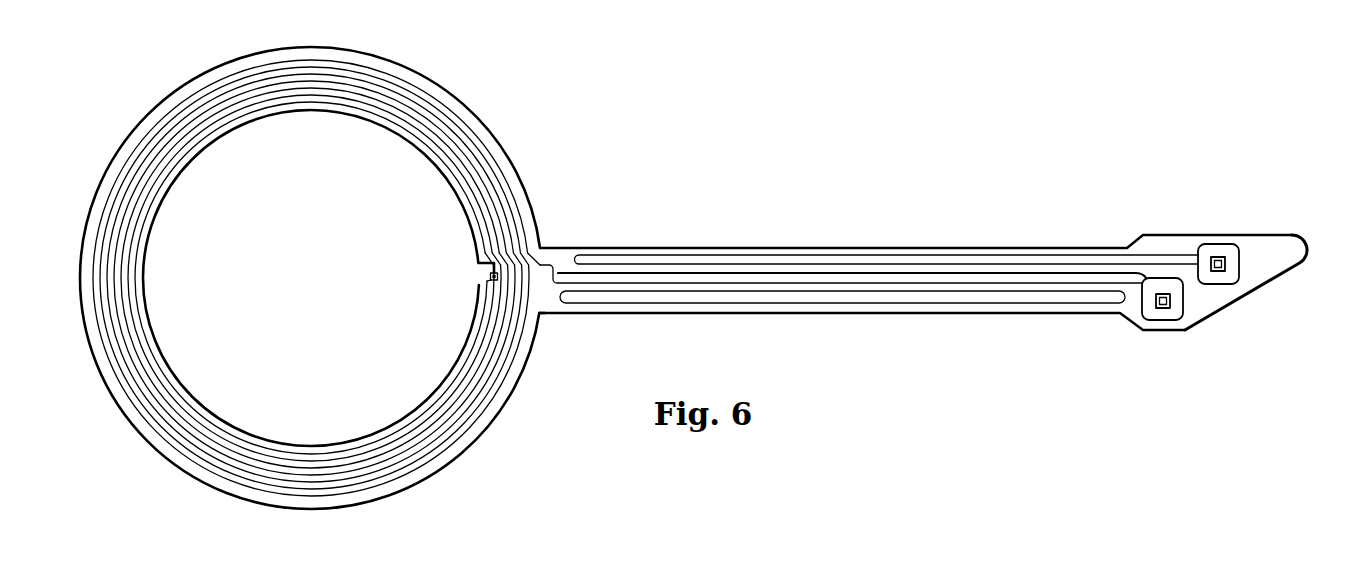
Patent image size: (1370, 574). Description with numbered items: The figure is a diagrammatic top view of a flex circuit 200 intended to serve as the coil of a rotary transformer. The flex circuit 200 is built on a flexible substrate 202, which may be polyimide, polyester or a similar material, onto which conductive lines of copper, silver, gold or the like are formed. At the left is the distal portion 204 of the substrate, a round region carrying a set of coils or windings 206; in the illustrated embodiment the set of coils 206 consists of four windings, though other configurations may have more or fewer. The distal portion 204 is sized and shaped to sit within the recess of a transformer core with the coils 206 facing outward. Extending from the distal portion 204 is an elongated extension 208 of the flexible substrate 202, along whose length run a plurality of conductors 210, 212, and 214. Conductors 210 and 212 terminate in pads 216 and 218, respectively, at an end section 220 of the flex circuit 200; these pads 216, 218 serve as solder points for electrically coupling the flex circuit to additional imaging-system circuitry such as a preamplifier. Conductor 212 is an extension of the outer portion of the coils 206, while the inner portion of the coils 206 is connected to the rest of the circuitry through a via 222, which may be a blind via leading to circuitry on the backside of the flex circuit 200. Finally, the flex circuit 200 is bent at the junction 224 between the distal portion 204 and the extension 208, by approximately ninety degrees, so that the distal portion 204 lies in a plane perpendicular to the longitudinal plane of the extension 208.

The flex circuit 200 is at (845, 154).
The flexible substrate 202 is at (720, 247).
The distal portion 204 is at (151, 112).
The set of coils or windings 206 is at (316, 97).
The elongated extension 208 is at (835, 322).
The conductor 210 is at (1043, 263).
The conductor 212 is at (558, 263).
The conductor 214 is at (954, 304).
The pad 216 is at (1239, 266).
The pad 218 is at (1183, 308).
The end section 220 is at (1255, 234).
The via 222 is at (490, 277).
The junction 224 is at (548, 330).